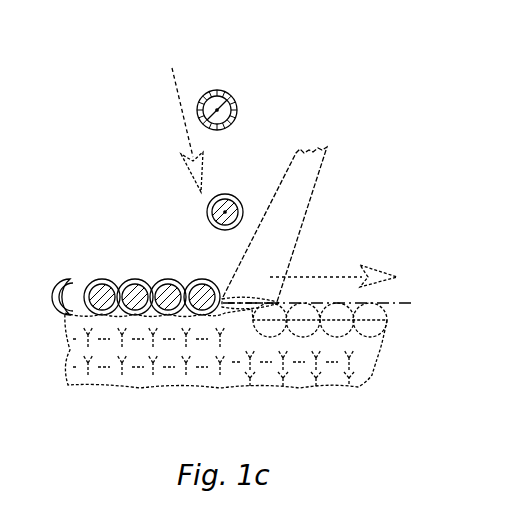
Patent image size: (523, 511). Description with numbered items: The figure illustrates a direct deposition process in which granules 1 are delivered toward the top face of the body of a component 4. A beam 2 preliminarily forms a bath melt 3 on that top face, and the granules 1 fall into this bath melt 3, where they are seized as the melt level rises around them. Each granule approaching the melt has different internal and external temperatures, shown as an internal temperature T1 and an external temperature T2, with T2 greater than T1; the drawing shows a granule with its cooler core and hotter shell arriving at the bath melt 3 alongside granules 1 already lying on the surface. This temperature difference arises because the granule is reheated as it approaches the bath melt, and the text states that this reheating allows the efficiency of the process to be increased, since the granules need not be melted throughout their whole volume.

The internal granule temperature T1 is at (228, 96).
The external granule temperature T2 is at (236, 113).
The granules 1 is at (225, 212).
The beam 2 is at (292, 225).
The bath melt 3 is at (226, 308).
The component 4 is at (297, 368).